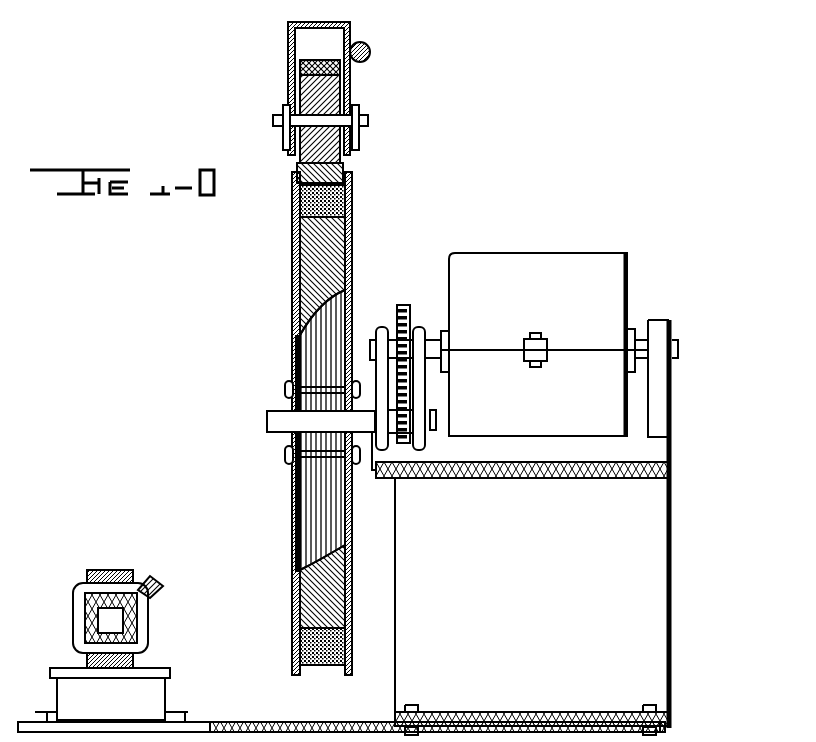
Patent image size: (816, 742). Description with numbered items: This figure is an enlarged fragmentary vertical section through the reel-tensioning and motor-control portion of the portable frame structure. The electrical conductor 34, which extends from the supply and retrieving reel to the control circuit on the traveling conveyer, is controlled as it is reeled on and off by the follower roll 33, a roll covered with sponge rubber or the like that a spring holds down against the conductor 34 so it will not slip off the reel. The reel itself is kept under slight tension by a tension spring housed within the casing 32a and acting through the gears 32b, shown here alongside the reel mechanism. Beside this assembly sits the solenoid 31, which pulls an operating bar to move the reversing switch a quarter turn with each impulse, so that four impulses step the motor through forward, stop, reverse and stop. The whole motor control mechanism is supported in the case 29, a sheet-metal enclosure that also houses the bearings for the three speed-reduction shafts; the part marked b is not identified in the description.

The case 29 is at (478, 480).
The solenoid 31 is at (108, 570).
The follower roll 33 is at (352, 87).
The electrical conductor 34 is at (346, 205).
The rack rod b is at (290, 268).
The gears 32b is at (413, 292).
The casing 32a is at (570, 272).